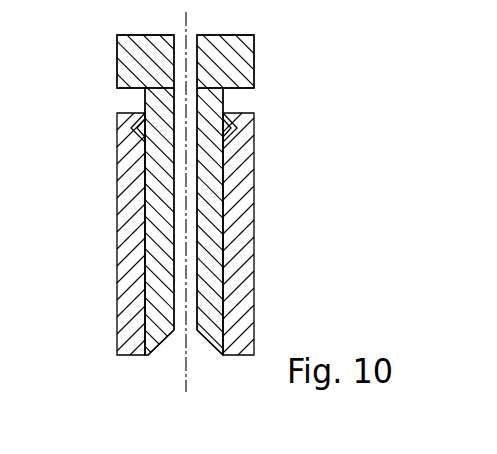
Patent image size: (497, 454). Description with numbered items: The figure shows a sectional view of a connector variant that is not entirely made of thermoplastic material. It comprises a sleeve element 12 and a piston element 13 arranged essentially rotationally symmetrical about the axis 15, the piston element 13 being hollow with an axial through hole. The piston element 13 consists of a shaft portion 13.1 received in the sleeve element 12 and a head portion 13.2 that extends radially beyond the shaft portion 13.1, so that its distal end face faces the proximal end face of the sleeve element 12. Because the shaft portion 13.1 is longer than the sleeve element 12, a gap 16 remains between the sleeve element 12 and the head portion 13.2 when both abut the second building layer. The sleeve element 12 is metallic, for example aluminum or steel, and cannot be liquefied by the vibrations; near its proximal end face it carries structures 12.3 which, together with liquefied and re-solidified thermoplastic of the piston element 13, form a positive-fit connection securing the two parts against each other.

The sleeve element 12 is at (242, 261).
The structures 12.3 is at (130, 138).
The piston element 13 is at (145, 103).
The shaft portion 13.1 is at (267, 35).
The head portion 13.2 is at (208, 208).
The axis 15 is at (183, 380).
The gap 16 is at (248, 98).